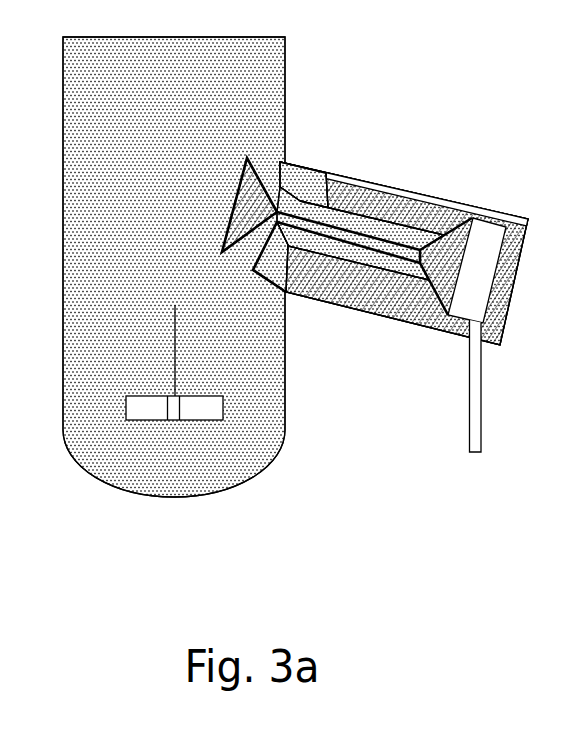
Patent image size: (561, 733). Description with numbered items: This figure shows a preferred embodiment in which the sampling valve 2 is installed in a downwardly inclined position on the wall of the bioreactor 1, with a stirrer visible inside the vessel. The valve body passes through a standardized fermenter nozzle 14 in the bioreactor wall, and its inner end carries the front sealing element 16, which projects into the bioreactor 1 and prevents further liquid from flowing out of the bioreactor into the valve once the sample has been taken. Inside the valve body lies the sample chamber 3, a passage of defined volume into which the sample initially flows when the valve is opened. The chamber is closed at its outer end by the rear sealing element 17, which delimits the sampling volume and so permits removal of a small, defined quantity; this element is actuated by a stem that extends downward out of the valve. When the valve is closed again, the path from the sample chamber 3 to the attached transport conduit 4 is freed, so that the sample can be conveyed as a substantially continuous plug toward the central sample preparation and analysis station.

The bioreactor 1 is at (283, 395).
The sampling valve 2 is at (390, 200).
The sample chamber 3 is at (355, 248).
The transport conduit 4 is at (468, 433).
The standardized fermenter nozzle 14 is at (310, 172).
The front sealing element 16 is at (263, 217).
The rear sealing element 17 is at (470, 217).